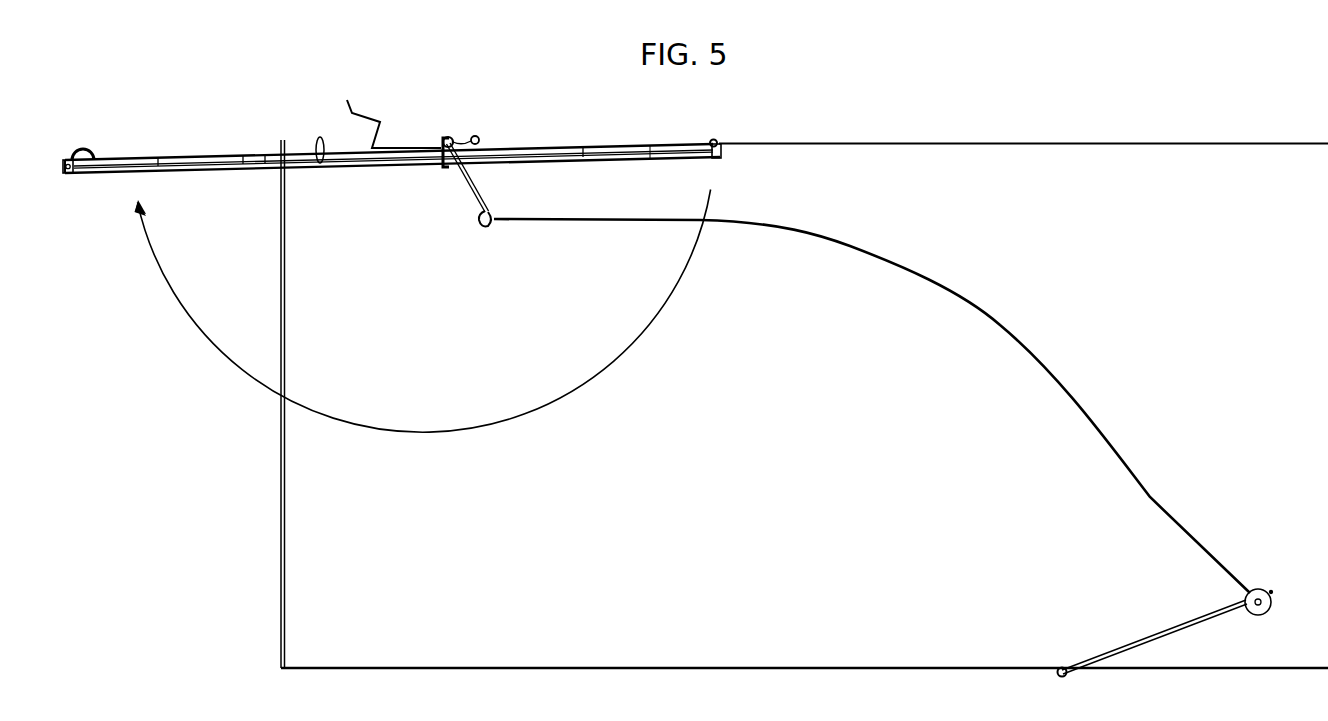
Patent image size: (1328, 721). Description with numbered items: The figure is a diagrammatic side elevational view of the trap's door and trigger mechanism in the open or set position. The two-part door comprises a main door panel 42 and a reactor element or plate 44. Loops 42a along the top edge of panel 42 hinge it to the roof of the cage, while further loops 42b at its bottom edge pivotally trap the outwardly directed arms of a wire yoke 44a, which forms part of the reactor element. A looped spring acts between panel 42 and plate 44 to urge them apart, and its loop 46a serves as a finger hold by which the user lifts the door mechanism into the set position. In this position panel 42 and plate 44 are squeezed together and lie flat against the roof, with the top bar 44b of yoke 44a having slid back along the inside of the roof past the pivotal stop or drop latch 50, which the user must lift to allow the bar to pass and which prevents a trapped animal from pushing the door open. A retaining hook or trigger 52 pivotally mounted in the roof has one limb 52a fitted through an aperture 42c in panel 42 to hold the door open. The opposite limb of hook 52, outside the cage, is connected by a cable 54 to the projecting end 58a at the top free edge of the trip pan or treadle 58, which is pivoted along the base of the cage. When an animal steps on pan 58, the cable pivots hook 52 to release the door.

The main door panel 42 is at (343, 170).
The loops 42a is at (722, 142).
The further loops 42b is at (61, 158).
The aperture 42c is at (434, 168).
The reactor element or plate 44 is at (176, 158).
The wire yoke 44a is at (265, 153).
The top bar 44b is at (711, 139).
The loop 46a is at (91, 151).
The pivotal stop or drop latch 50 is at (364, 114).
The retaining hook or trigger 52 is at (474, 181).
The limb 52a is at (438, 137).
The cable 54 is at (843, 246).
The trip pan or treadle 58 is at (1153, 633).
The projecting end 58a is at (1258, 589).